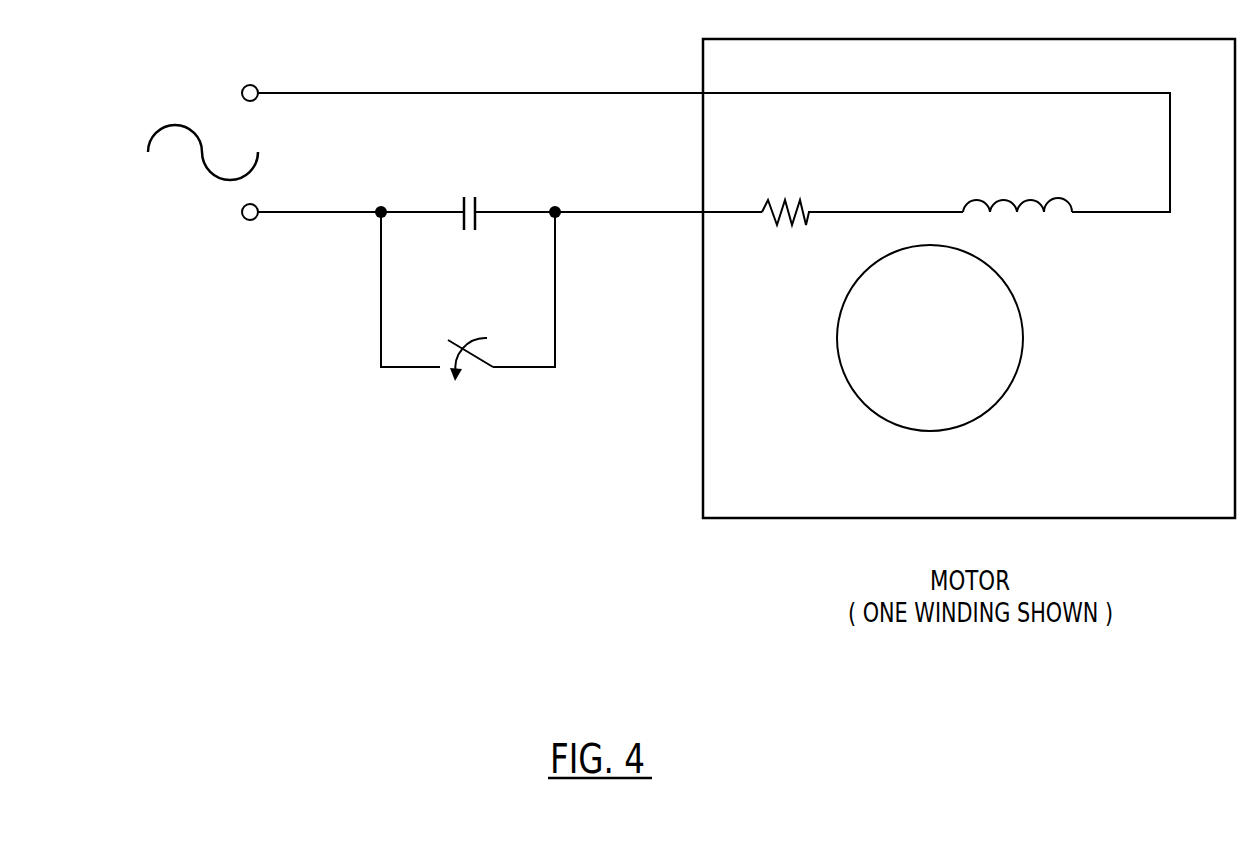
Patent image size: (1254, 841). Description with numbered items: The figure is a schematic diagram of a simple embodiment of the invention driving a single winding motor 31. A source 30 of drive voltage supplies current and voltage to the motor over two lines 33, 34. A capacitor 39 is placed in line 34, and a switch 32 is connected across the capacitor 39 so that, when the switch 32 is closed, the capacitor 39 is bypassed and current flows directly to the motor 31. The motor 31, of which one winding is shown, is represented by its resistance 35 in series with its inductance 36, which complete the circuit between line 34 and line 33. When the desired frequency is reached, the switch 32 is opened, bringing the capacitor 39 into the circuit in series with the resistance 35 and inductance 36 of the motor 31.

The source 30 is at (221, 191).
The single winding motor 31 is at (1023, 323).
The switch 32 is at (453, 340).
The line 33 is at (352, 92).
The line 34 is at (302, 215).
The resistance 35 is at (797, 203).
The inductance 36 is at (1060, 198).
The capacitor 39 is at (477, 200).